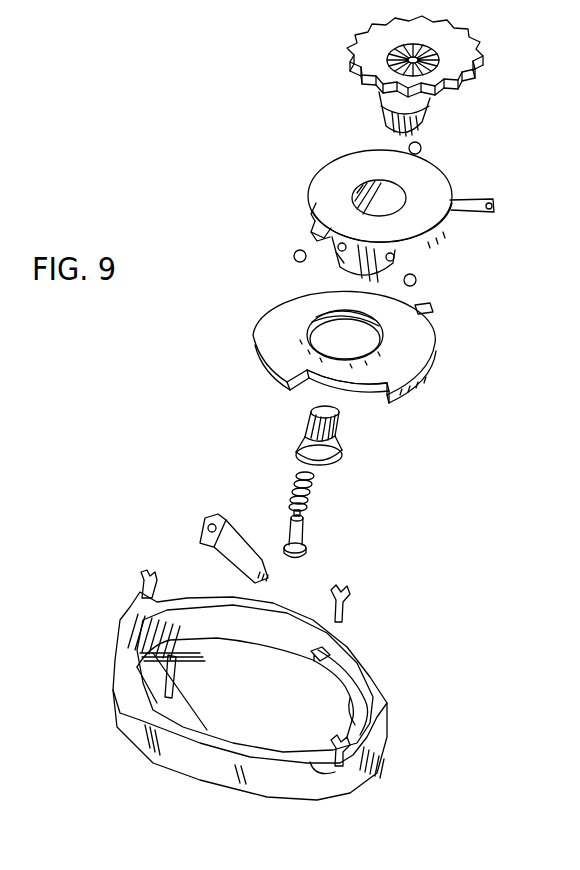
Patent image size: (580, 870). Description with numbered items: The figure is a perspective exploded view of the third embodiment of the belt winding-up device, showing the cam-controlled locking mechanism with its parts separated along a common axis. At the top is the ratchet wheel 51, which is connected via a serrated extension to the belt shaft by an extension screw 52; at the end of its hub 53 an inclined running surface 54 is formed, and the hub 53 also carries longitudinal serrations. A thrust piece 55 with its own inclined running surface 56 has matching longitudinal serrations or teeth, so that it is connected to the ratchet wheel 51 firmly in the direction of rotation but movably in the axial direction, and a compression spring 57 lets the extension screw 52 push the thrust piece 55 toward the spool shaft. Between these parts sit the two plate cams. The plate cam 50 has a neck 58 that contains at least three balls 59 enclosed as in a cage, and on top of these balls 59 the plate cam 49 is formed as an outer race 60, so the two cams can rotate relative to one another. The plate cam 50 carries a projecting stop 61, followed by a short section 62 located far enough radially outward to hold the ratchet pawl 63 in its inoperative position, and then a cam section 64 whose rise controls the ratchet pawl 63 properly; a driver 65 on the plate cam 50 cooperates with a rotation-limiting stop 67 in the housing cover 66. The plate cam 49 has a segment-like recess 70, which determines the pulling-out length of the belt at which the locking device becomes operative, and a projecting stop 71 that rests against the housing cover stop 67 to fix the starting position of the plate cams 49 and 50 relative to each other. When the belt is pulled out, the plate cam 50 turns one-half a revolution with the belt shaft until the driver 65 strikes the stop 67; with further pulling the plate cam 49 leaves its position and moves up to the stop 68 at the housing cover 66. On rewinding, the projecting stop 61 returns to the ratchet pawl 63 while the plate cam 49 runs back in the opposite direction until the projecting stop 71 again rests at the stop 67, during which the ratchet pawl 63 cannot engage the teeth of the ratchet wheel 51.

The plate cam 49 is at (413, 366).
The plate cam 50 is at (440, 233).
The ratchet wheel 51 is at (478, 58).
The extension screw 52 is at (305, 536).
The hub 53 is at (428, 120).
The inclined running surface 54 is at (386, 118).
The thrust piece 55 is at (339, 451).
The inclined running surface 56 is at (311, 441).
The compression spring 57 is at (292, 494).
The neck 58 is at (338, 258).
The balls 59 is at (423, 150).
The outer race 60 is at (312, 313).
The projecting stop 61 is at (318, 236).
The short section 62 is at (313, 218).
The ratchet pawl 63 is at (208, 543).
The cam section 64 is at (311, 206).
The driver 65 is at (490, 200).
The housing cover 66 is at (137, 703).
The rotation-limiting stop 67 is at (330, 655).
The stop 68 is at (355, 700).
The segment-like recess 70 is at (366, 393).
The projecting stop 71 is at (433, 311).